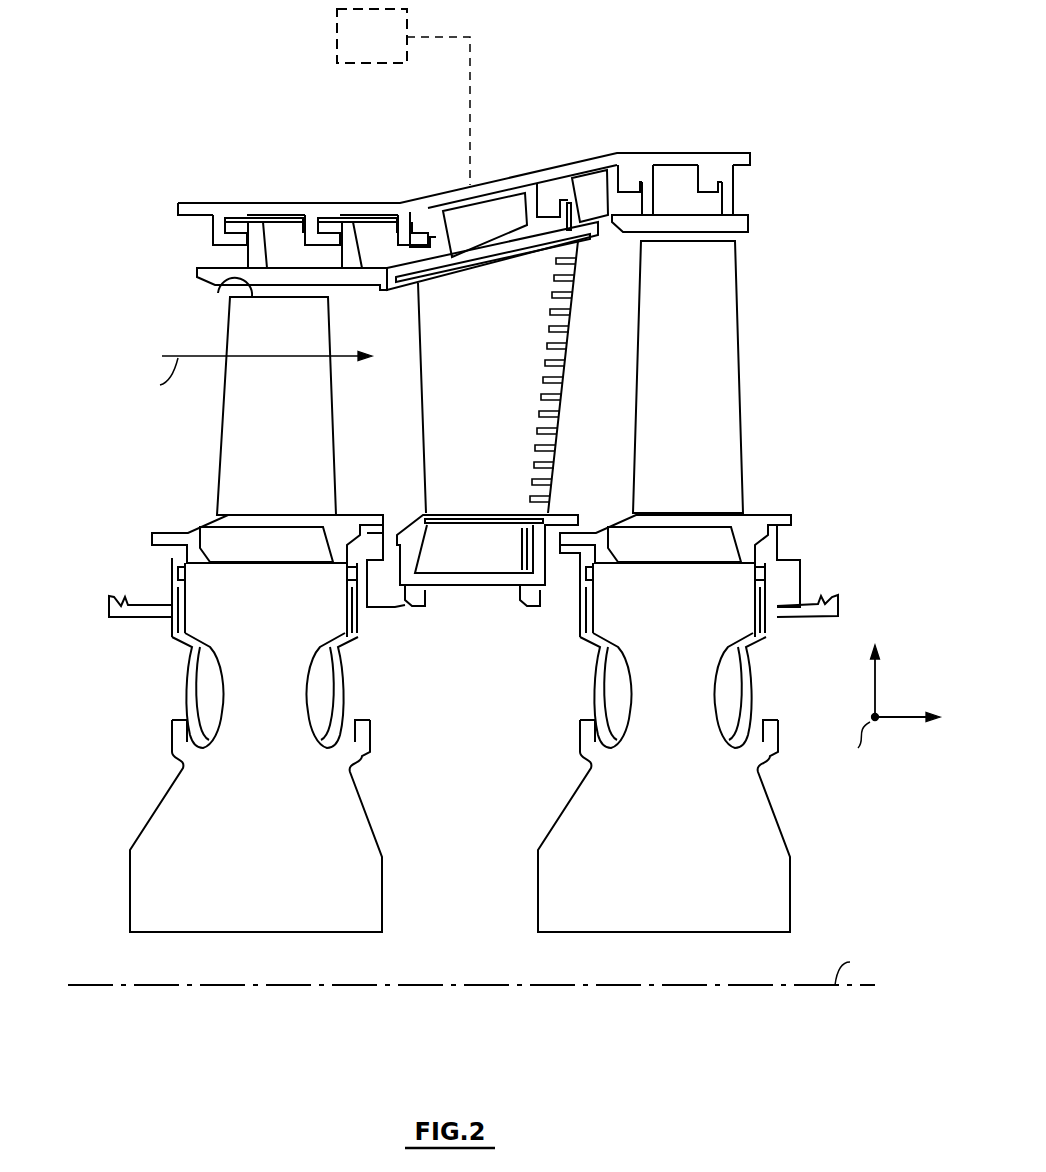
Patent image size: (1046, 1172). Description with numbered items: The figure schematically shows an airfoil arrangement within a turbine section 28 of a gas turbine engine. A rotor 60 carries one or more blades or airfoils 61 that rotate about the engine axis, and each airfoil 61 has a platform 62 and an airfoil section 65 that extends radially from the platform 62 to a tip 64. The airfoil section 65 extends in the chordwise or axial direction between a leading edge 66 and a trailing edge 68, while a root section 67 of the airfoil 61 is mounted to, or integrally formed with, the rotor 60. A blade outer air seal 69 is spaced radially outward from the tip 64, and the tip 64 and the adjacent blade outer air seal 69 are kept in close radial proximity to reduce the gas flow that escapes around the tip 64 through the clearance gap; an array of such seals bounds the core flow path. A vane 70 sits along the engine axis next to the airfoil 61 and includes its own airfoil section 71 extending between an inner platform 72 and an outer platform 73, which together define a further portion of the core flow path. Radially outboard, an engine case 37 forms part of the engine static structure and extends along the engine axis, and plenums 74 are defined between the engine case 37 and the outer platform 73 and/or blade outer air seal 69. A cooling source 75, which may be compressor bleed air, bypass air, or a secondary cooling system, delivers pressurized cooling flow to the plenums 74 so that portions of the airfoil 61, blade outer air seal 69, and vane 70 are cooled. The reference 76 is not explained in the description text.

The turbine section 28 is at (101, 143).
The engine case 37 is at (238, 201).
The rotor 60 is at (143, 820).
The airfoil 61 is at (340, 400).
The platform 62 is at (170, 533).
The tip 64 is at (218, 293).
The airfoil section 65 is at (253, 408).
The leading edge 66 is at (219, 457).
The root section 67 is at (205, 610).
The trailing edge 68 is at (337, 460).
The blade outer air seal 69 is at (188, 273).
The vane 70 is at (522, 377).
The airfoil section 71 is at (510, 458).
The inner platform 72 is at (567, 513).
The outer platform 73 is at (598, 238).
The plenum 74 is at (288, 243).
The cooling source 75 is at (385, 50).
The outer case 76 is at (592, 131).